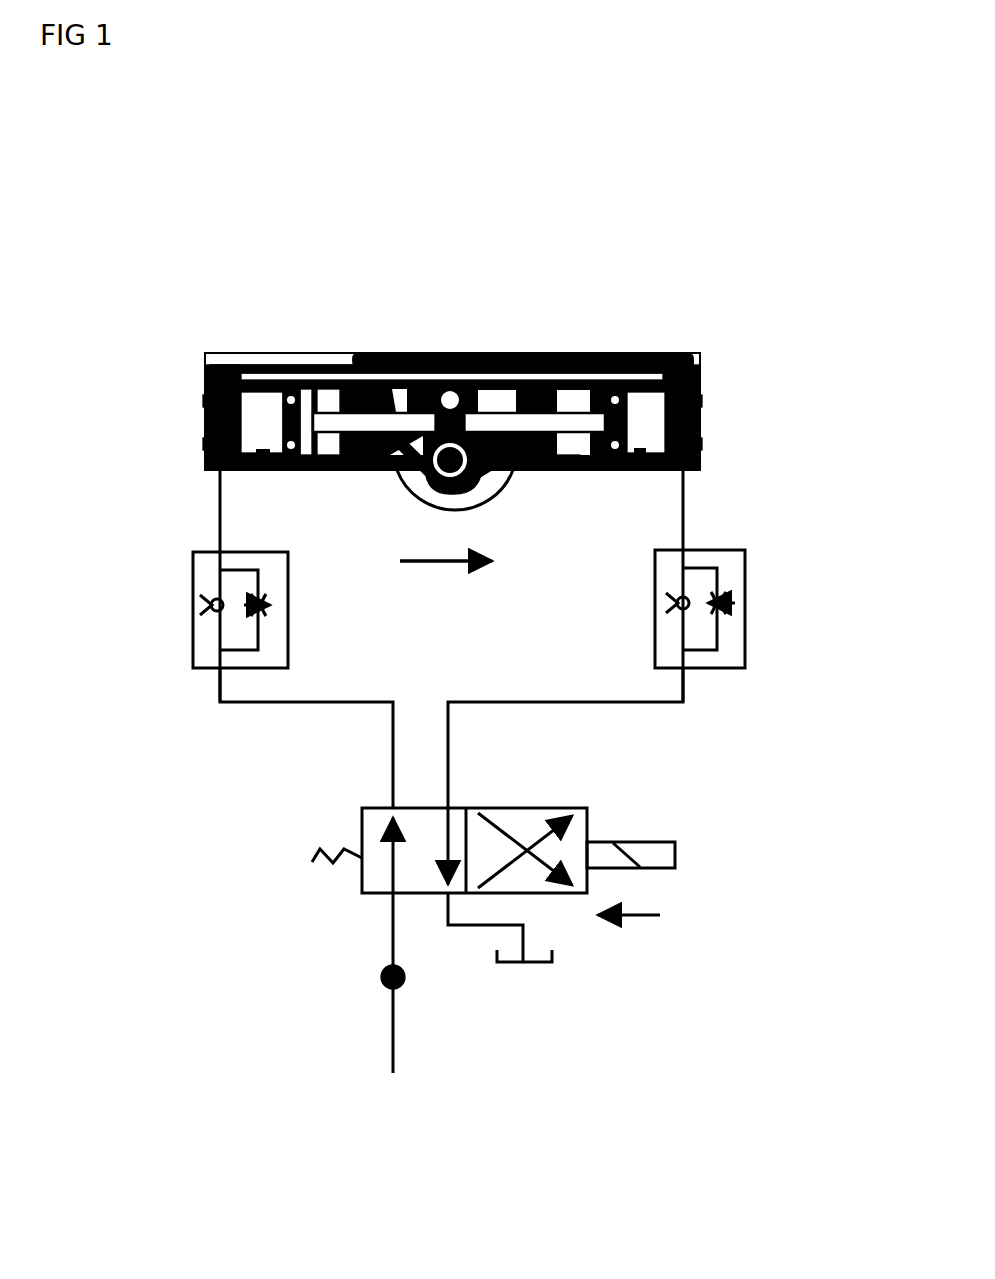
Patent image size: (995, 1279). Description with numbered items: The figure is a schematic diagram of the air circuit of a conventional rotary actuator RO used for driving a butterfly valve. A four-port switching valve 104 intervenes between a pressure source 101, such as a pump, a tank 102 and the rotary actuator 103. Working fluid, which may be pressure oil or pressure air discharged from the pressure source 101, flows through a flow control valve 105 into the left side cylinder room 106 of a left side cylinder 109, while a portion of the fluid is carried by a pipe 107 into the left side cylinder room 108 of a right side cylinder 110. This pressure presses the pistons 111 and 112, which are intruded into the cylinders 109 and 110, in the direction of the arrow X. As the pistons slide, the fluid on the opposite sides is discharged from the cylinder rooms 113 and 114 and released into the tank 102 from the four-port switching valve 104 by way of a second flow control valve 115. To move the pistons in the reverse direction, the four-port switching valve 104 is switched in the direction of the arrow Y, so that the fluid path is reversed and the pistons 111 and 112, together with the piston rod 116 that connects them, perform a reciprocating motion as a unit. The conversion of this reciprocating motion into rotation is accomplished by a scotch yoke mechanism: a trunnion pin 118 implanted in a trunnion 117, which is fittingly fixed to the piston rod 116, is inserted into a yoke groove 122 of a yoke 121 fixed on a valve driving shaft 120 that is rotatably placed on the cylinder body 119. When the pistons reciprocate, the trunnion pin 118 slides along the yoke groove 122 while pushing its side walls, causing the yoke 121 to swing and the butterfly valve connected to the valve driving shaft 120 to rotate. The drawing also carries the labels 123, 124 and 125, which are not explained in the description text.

The rotary actuator RO is at (768, 194).
The pressure source 101 is at (391, 1005).
The tank 102 is at (545, 950).
The rotary actuator 103 is at (496, 298).
The four-port switching valve 104 is at (590, 808).
The flow control valve 105 is at (215, 605).
The left side cylinder room 106 is at (250, 418).
The pipe 107 is at (277, 362).
The left side cylinder room 108 is at (620, 352).
The left side cylinder 109 is at (250, 466).
The right side cylinder 110 is at (656, 468).
The piston 111 is at (297, 472).
The piston 112 is at (618, 470).
The cylinder room 113 is at (333, 470).
The cylinder room 114 is at (648, 413).
The flow control valve 115 is at (735, 604).
The piston rod 116 is at (365, 358).
The trunnion 117 is at (445, 358).
The trunnion pin 118 is at (378, 472).
The cylinder body 119 is at (470, 480).
The valve driving shaft 120 is at (476, 566).
The yoke 121 is at (520, 357).
The yoke groove 122 is at (462, 357).
The left lower guide 123 is at (400, 358).
The cushion 124 is at (362, 470).
The reference plane 125 is at (243, 362).
The arrow X is at (426, 563).
The arrow Y is at (633, 918).